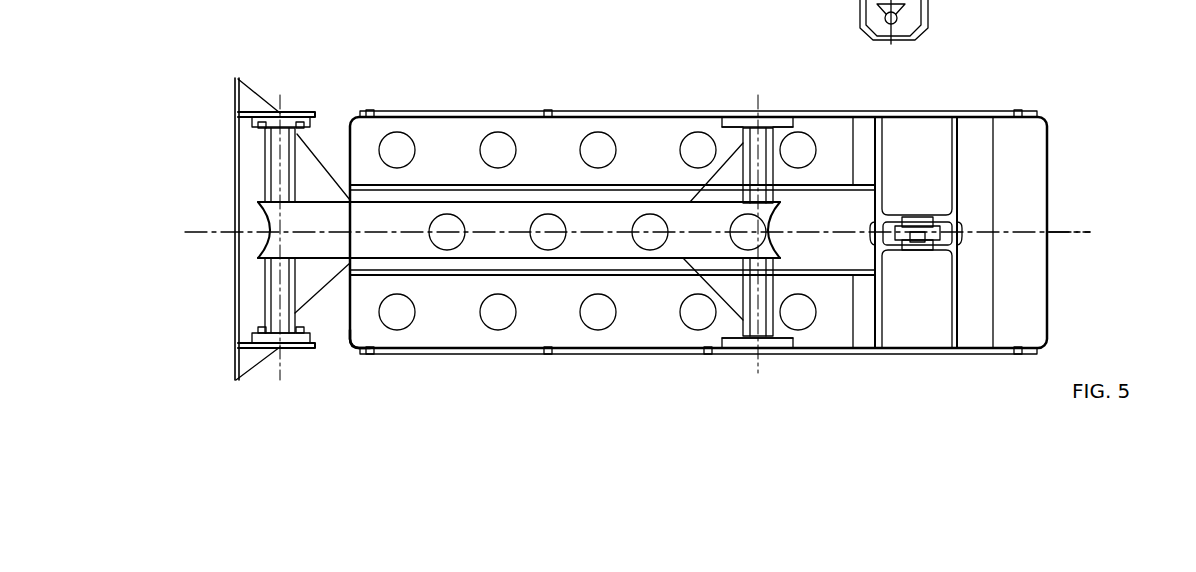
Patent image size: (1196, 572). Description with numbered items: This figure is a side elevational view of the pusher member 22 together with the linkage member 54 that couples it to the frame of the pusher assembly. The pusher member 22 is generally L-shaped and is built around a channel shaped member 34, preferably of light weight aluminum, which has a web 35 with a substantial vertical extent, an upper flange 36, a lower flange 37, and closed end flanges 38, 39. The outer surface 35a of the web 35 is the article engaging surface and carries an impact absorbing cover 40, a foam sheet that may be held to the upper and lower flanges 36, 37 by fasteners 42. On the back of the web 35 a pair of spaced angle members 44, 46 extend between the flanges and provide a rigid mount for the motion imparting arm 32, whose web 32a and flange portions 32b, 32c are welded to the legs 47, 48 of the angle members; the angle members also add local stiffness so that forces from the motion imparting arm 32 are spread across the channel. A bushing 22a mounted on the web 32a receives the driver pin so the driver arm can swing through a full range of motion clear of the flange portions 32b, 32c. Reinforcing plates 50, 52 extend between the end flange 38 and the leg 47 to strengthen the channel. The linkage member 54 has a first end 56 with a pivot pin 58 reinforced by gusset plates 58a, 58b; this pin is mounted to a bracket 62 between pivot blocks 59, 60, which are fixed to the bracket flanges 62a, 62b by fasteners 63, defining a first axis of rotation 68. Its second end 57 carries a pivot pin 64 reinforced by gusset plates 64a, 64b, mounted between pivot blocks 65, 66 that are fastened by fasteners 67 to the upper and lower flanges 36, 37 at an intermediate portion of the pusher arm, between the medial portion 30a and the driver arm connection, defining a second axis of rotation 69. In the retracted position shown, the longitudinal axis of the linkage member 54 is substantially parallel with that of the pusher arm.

The pusher member 22 is at (653, 96).
The bushing 22a is at (897, 250).
The medial portion of pusher arm 30a is at (662, 353).
The motion imparting arm 32 is at (883, 227).
The web of motion imparting arm 32a is at (933, 250).
The flange portion of motion imparting arm 32b is at (892, 220).
The flange portion of motion imparting arm 32c is at (947, 220).
The channel shaped member 34 is at (1048, 132).
The web 35 is at (1030, 193).
The outer surface of web 35a is at (453, 125).
The upper flange 36 is at (860, 117).
The lower flange 37 is at (893, 353).
The end flange 38 is at (345, 340).
The end flange 39 is at (1048, 217).
The impact absorbing cover 40 is at (383, 110).
The fasteners 42 is at (545, 112).
The angle member 44 is at (862, 327).
The angle member 46 is at (990, 313).
The leg of angle member 47 is at (885, 142).
The leg of angle member 48 is at (958, 140).
The reinforcing plate 50 is at (567, 185).
The reinforcing plate 52 is at (522, 278).
The linkage member 54 is at (250, 232).
The first end of linkage member 56 is at (303, 197).
The second end of linkage member 57 is at (737, 265).
The pivot pin 58 is at (280, 182).
The gusset plate 58a is at (330, 173).
The gusset plate 58b is at (317, 280).
The pivot block 59 is at (283, 128).
The pivot block 60 is at (293, 343).
The bracket 62 is at (234, 84).
The flange of bracket 62a is at (268, 112).
The flange of bracket 62b is at (303, 343).
The fasteners 63 is at (260, 128).
The pivot pin 64 is at (773, 142).
The gusset plate 64a is at (703, 177).
The gusset plate 64b is at (720, 282).
The pivot block 65 is at (732, 120).
The pivot block 66 is at (780, 343).
The fasteners 67 is at (727, 132).
The first axis of rotation 68 is at (278, 360).
The second axis of rotation 69 is at (760, 373).